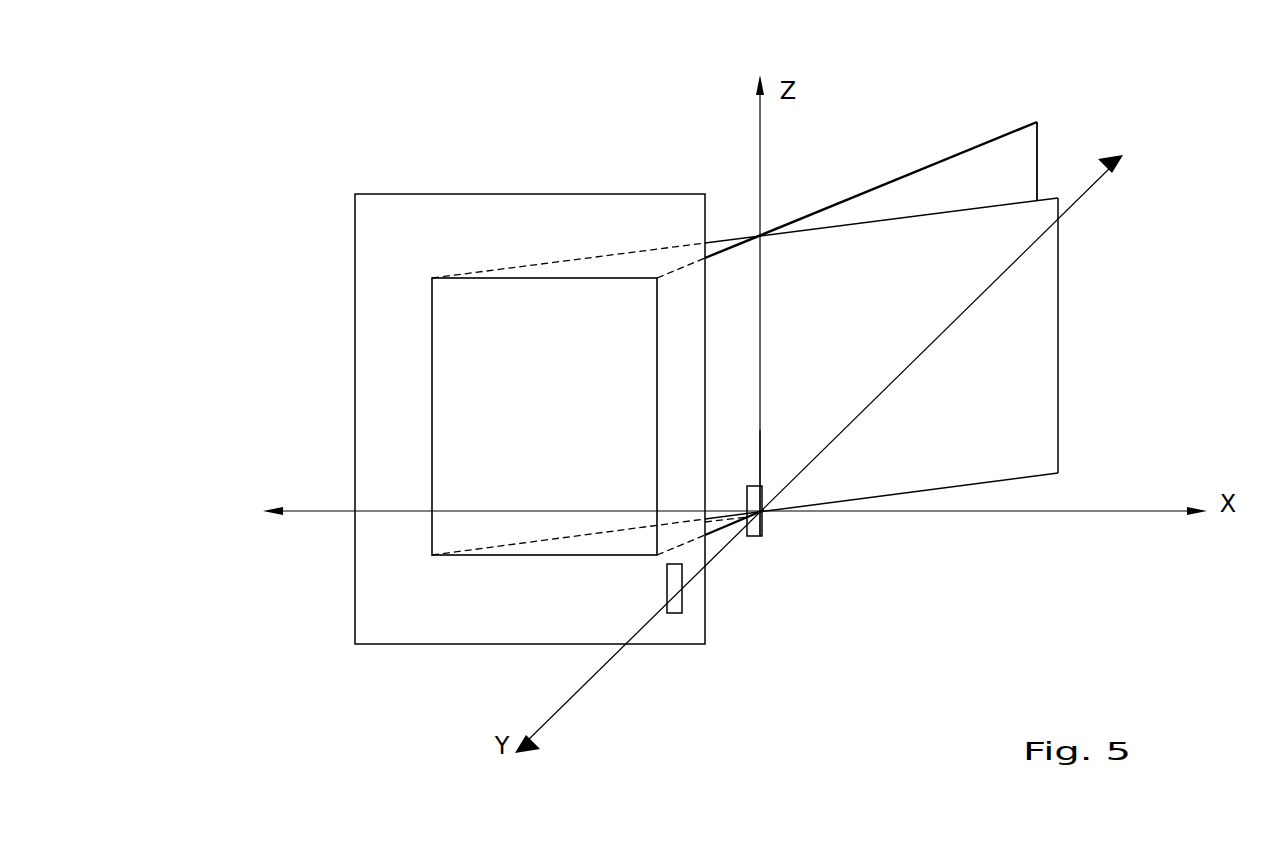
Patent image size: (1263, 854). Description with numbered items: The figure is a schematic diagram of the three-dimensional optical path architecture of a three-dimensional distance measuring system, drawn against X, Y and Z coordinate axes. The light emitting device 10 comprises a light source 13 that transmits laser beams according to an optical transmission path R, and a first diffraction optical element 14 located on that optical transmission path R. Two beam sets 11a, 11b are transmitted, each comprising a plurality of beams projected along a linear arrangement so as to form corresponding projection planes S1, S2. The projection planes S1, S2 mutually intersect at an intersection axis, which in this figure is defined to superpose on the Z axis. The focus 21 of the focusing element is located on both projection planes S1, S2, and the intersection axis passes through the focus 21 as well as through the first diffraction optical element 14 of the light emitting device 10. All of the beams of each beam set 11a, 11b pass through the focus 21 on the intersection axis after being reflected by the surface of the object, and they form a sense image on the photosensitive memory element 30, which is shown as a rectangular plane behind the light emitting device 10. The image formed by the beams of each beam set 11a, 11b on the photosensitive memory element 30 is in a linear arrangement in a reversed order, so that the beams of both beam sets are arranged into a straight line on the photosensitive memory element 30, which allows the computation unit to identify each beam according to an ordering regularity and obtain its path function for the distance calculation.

The light emitting device 10 is at (605, 497).
The light source 13 is at (676, 614).
The first diffraction optical element 14 is at (751, 537).
The focus 21 is at (762, 425).
The photosensitive memory element 30 is at (354, 240).
The beam set 11a is at (982, 488).
The beam set 11b is at (982, 150).
The projection plane S1 is at (1025, 155).
The projection plane S2 is at (1050, 440).
The optical transmission path R is at (727, 548).